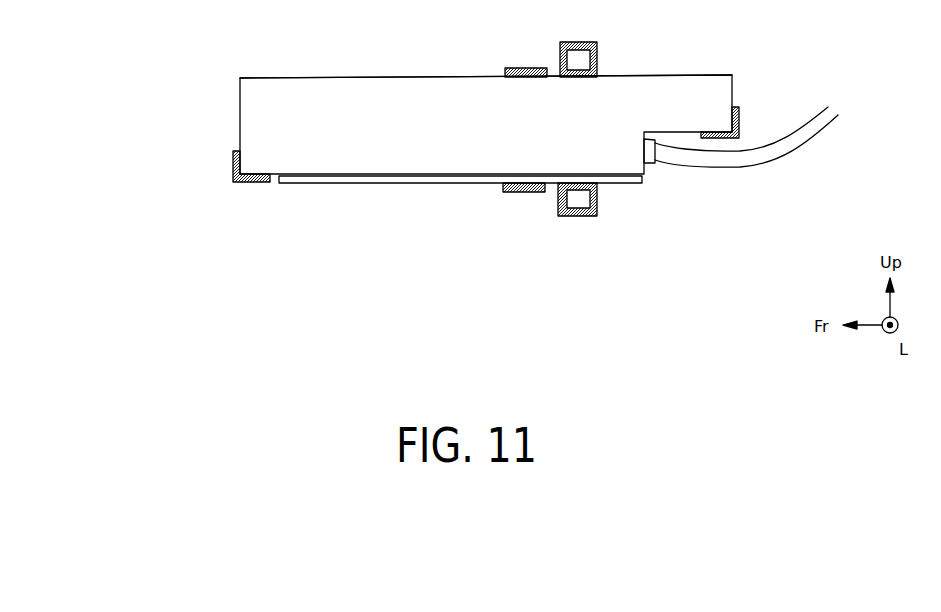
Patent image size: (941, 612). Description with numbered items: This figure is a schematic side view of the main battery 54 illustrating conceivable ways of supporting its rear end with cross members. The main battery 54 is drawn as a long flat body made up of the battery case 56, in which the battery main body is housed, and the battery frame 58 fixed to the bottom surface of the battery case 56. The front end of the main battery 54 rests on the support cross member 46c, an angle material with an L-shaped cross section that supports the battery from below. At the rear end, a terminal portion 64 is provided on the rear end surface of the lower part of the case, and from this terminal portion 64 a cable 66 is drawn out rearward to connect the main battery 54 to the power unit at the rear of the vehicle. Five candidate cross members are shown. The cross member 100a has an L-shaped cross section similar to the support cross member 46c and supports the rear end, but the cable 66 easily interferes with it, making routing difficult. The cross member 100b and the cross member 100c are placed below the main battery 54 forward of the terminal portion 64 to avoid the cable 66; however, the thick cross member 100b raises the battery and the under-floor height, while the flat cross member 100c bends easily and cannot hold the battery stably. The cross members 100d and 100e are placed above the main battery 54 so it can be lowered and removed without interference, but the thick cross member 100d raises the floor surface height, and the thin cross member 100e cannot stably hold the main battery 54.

The main battery 54 is at (362, 90).
The battery case 56 is at (486, 76).
The battery frame 58 is at (372, 184).
The support cross member 46c is at (233, 160).
The terminal portion 64 is at (651, 164).
The cable 66 is at (808, 141).
The cross member 100a is at (740, 121).
The cross member 100b is at (583, 217).
The cross member 100c is at (520, 193).
The cross member 100d is at (580, 42).
The cross member 100e is at (525, 68).